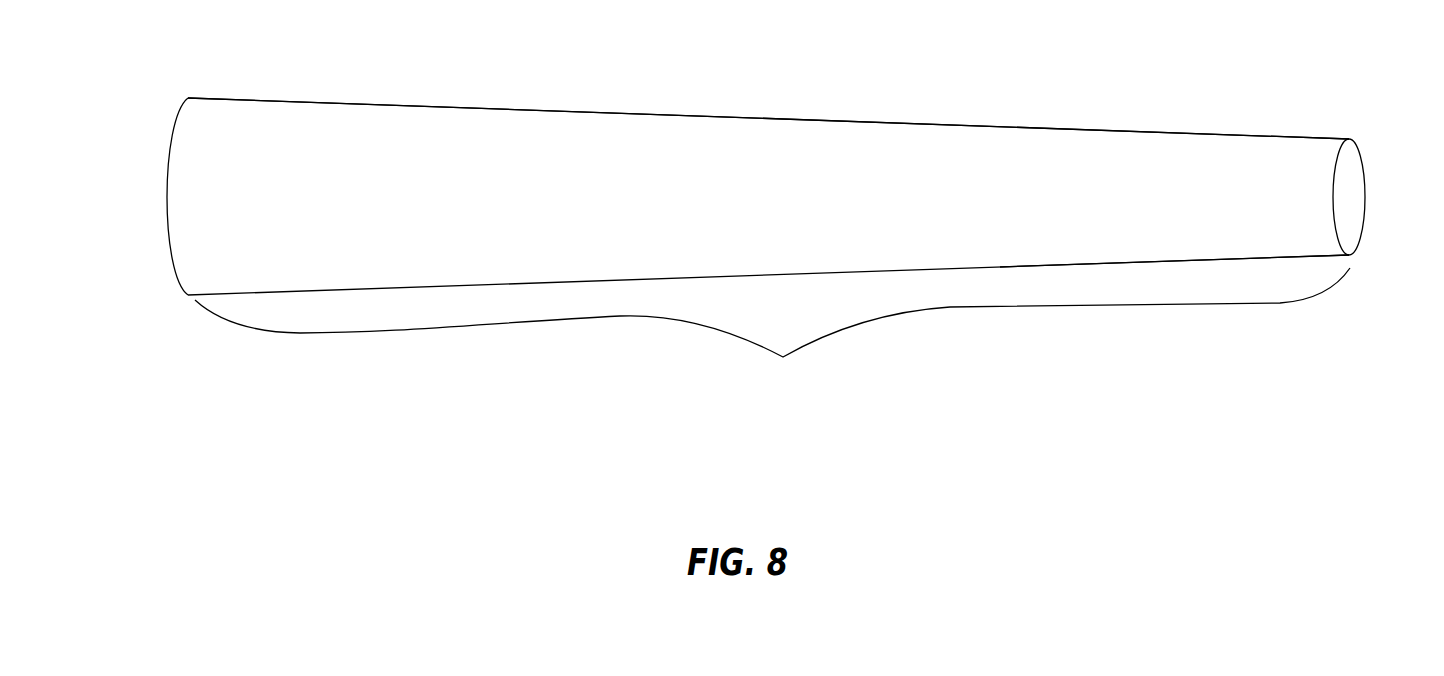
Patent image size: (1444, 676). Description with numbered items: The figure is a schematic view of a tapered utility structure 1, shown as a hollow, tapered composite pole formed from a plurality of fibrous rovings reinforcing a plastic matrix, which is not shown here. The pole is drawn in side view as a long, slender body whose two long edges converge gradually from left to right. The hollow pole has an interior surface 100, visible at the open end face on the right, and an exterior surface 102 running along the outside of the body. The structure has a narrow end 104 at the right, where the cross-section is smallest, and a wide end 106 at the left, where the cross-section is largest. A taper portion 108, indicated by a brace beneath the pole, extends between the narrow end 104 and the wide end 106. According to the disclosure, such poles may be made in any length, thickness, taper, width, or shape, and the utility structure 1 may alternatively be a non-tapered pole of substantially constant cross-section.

The tapered utility structure 1 is at (753, 133).
The interior surface 100 is at (1347, 172).
The exterior surface 102 is at (468, 107).
The narrow end 104 is at (1356, 252).
The wide end 106 is at (168, 197).
The taper portion 108 is at (772, 335).